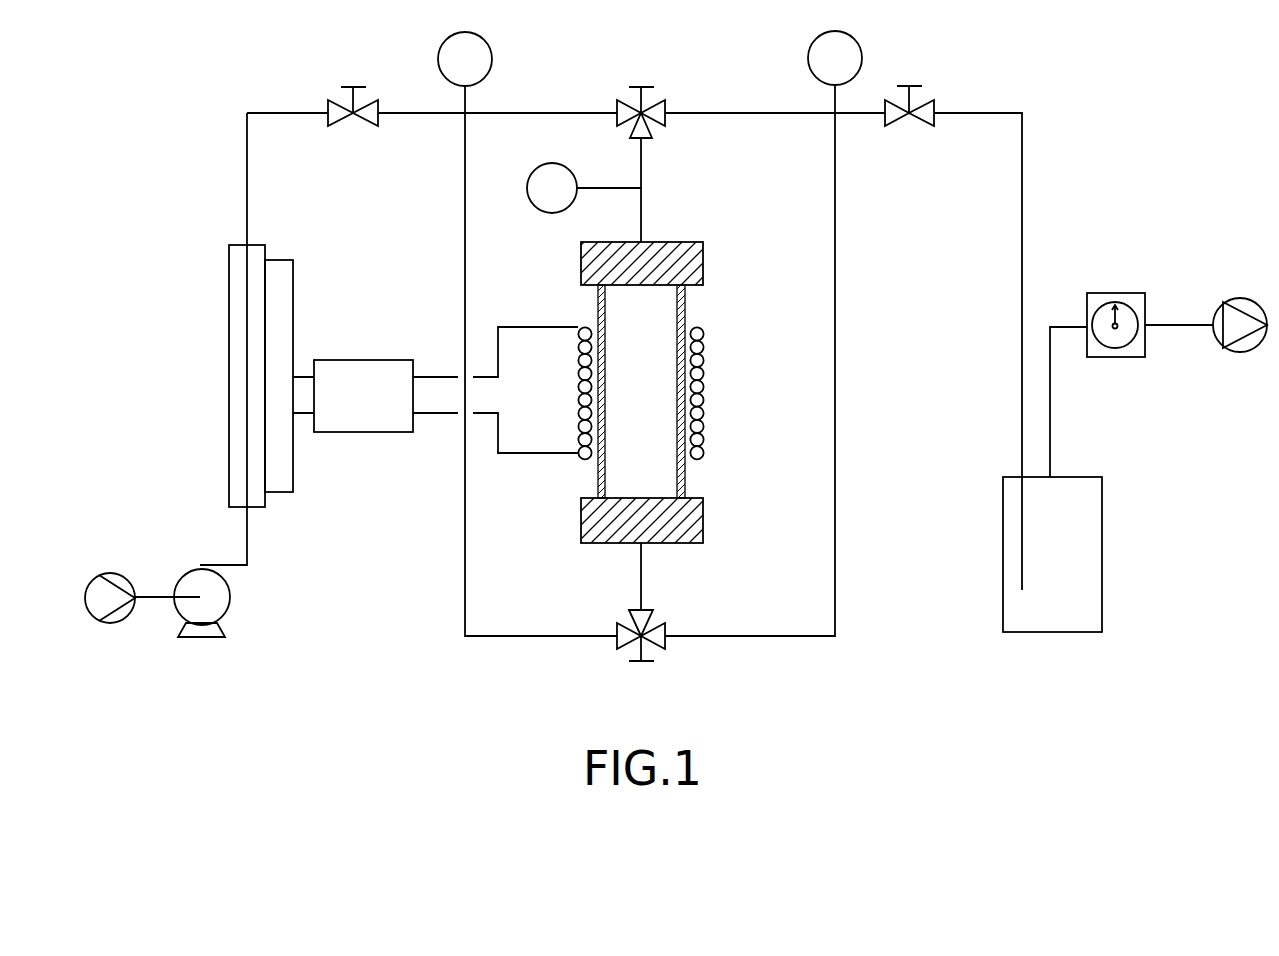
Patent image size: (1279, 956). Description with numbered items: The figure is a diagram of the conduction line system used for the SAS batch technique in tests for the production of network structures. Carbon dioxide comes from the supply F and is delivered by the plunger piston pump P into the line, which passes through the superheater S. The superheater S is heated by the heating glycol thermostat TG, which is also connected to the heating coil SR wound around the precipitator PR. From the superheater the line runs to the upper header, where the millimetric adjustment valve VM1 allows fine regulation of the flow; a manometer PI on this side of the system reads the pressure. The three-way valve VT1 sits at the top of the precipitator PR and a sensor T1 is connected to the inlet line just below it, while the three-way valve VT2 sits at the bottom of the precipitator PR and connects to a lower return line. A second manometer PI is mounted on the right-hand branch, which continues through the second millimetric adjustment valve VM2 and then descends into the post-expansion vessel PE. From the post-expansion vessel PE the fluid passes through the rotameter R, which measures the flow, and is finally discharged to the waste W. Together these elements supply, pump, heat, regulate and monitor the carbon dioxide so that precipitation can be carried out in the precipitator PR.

The millimetric adjustment valve VM1 is at (353, 123).
The three-way valve VT1 is at (660, 122).
The millimetric adjustment valve VM2 is at (909, 122).
The three-way valve VT2 is at (625, 622).
The manometer PI is at (650, 58).
The temperature sensor T1 is at (552, 188).
The superheater S is at (248, 376).
The heating glycol thermostat TG is at (363, 396).
The heating coil SR is at (662, 393).
The precipitator PR is at (642, 392).
The supply of CO2 F is at (110, 578).
The plunger piston pump P is at (217, 603).
The rotameter R is at (1116, 344).
The waste W is at (1240, 343).
The post-expansion vessel PE is at (1052, 554).